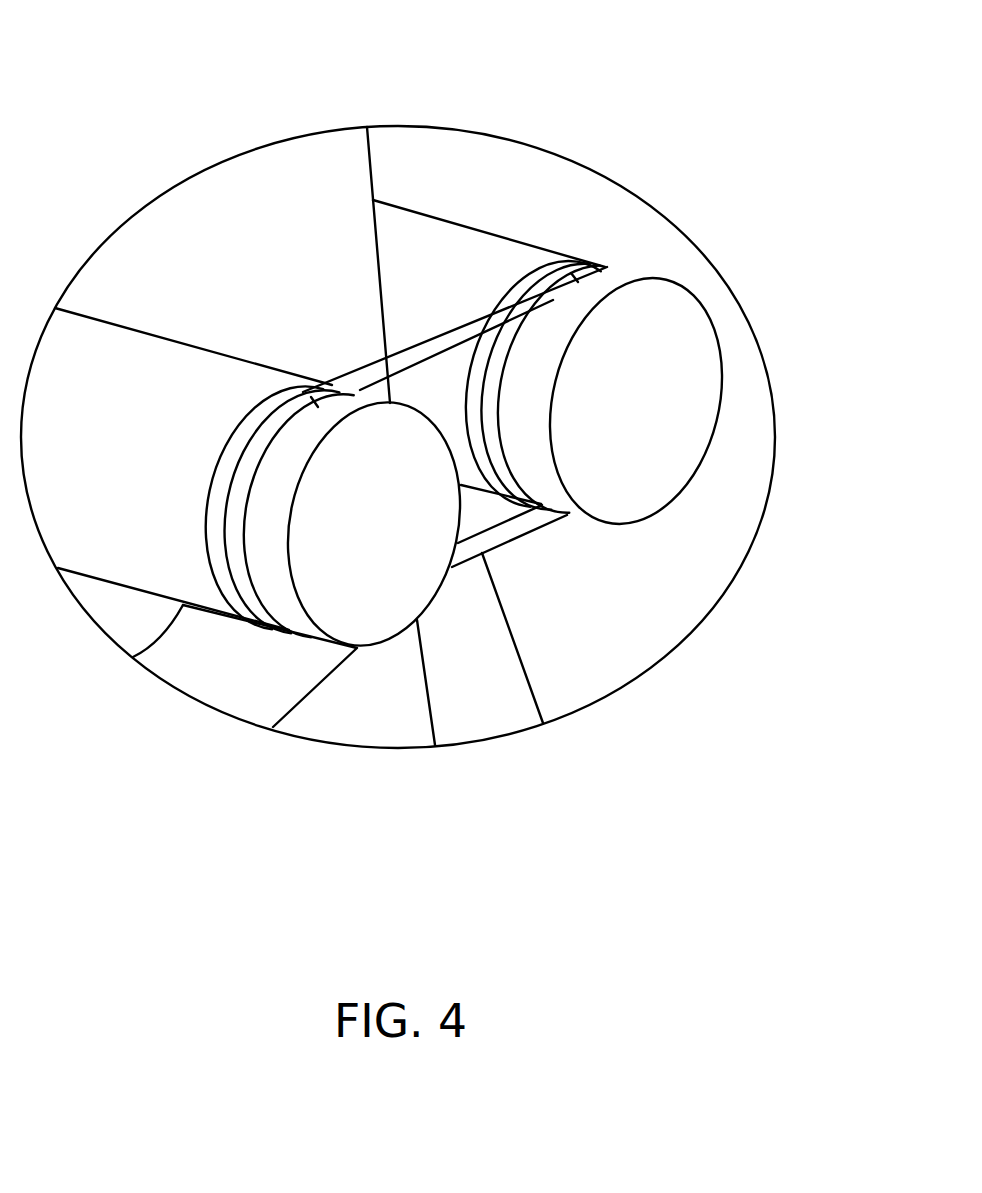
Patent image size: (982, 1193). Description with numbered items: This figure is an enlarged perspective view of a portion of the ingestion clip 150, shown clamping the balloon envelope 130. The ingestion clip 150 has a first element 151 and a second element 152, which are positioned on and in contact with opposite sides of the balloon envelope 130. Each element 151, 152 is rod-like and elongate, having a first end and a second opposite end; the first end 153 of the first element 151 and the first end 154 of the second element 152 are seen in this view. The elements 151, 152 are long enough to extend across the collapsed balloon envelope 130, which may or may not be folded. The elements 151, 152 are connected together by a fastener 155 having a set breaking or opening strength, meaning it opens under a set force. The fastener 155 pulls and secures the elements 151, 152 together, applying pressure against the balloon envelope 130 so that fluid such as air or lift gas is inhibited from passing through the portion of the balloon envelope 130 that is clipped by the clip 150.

The balloon envelope 130 is at (378, 162).
The ingestion clip 150 is at (580, 593).
The first element 151 is at (488, 228).
The second element 152 is at (133, 656).
The first end of the first element 153 is at (715, 335).
The first end of the second element 154 is at (273, 727).
The fastener 155 is at (542, 727).